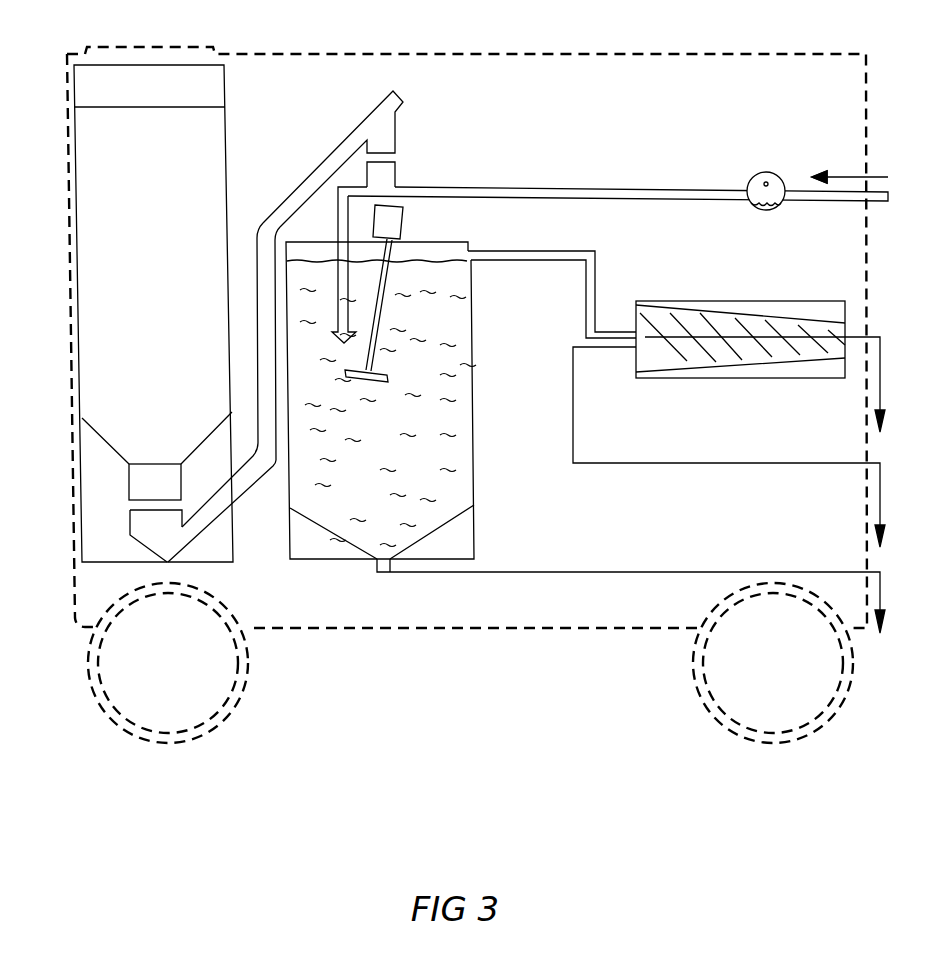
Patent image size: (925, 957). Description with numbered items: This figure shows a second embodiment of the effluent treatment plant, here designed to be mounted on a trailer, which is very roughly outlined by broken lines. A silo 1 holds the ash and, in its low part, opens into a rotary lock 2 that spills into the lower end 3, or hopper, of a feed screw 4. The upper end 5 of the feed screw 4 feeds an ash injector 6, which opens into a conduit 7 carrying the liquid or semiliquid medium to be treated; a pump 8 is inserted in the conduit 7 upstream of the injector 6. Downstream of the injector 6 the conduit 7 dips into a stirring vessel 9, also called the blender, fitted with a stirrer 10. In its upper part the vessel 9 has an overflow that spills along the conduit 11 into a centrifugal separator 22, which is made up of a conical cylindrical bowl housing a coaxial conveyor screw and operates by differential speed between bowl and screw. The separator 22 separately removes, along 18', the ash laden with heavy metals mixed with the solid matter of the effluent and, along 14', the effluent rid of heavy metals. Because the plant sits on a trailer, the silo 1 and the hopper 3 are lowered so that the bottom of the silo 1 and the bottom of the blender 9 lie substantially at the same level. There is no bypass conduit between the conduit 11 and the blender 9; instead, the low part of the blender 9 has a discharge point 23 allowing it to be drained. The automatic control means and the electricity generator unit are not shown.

The silo 1 is at (225, 128).
The rotary lock 2 is at (138, 480).
The lower end of the feed screw 3 is at (150, 528).
The feed screw 4 is at (245, 478).
The upper end of the feed screw 5 is at (383, 136).
The ash injector 6 is at (383, 177).
The conduit 7 is at (661, 188).
The pump 8 is at (766, 200).
The stirring vessel 9 is at (474, 385).
The stirrer 10 is at (390, 222).
The overflow conduit 11 is at (545, 252).
The effluent outlet 14' is at (631, 490).
The ash discharge 18' is at (828, 384).
The centrifugal separator 22 is at (785, 301).
The discharge point 23 is at (413, 572).